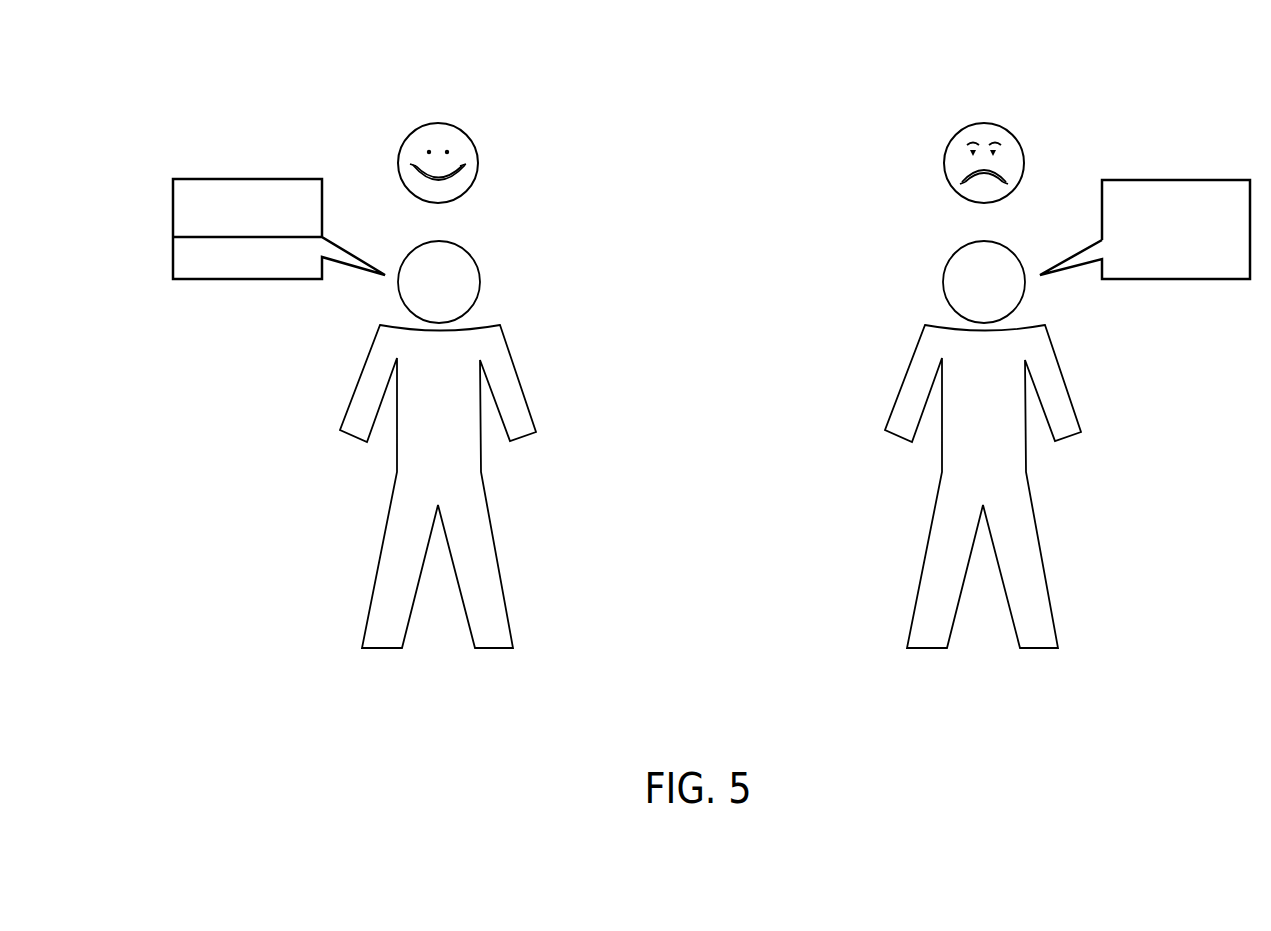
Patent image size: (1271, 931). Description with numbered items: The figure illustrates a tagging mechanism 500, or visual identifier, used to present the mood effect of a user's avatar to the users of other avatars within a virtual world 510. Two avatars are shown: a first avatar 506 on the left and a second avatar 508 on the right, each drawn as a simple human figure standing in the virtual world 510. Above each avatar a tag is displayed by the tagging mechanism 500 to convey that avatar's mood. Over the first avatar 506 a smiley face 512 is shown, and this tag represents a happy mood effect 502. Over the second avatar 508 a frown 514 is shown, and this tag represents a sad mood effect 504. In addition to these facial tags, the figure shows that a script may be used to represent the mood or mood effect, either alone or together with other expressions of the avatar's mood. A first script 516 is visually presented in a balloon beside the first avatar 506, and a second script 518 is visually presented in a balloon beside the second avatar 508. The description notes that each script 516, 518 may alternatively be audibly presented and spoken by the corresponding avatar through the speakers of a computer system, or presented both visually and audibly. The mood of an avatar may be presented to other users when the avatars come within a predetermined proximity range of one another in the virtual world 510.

The tagging mechanism 500 is at (520, 117).
The happy mood effect 502 is at (412, 115).
The sad mood effect 504 is at (1010, 117).
The avatar 506 is at (358, 386).
The avatar 508 is at (1066, 387).
The virtual world 510 is at (733, 306).
The smiley face 512 is at (481, 168).
The frown 514 is at (943, 167).
The script 516 is at (244, 178).
The script 518 is at (1180, 178).